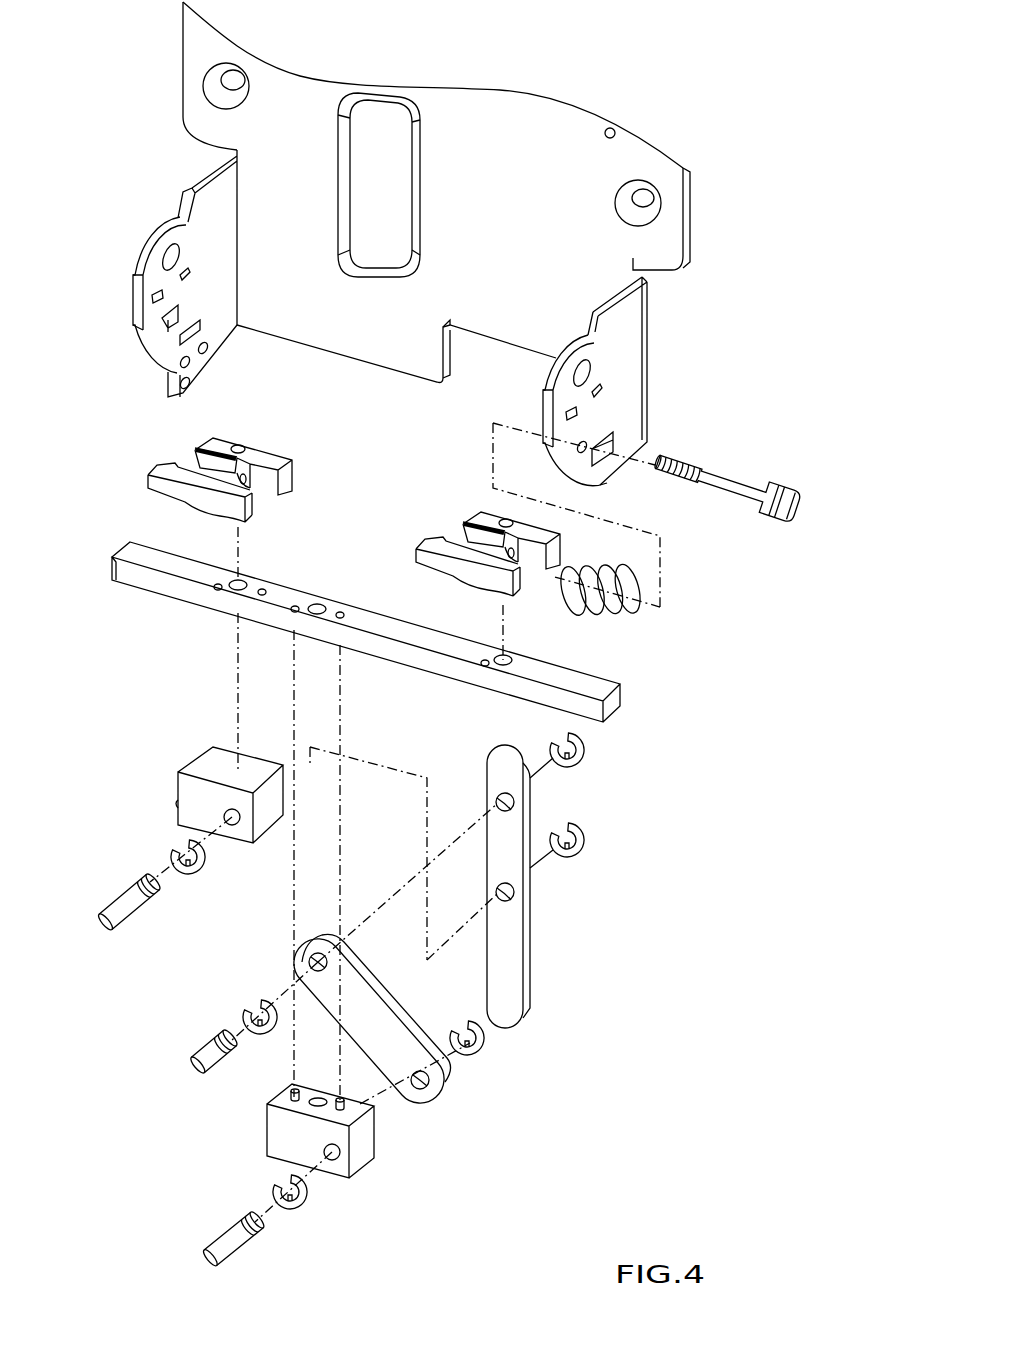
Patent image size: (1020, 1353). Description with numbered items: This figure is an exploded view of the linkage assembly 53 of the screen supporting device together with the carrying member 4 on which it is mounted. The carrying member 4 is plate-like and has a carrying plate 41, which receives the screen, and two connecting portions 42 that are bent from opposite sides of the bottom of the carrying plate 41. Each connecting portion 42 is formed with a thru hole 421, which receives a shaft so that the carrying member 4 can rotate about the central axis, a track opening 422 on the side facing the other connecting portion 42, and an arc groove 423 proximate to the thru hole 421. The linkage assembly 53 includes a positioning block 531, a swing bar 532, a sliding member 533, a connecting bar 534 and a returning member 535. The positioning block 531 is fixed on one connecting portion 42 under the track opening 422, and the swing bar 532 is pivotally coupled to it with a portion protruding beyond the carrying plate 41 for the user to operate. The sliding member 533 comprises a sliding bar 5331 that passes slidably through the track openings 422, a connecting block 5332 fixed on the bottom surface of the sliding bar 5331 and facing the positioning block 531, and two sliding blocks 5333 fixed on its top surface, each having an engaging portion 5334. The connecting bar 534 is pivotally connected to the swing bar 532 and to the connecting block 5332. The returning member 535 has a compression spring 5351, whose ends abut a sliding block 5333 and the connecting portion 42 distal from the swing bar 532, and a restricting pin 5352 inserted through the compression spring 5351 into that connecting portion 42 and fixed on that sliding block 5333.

The carrying member 4 is at (105, 95).
The carrying plate 41 is at (197, 98).
The connecting portions 42 is at (197, 184).
The thru hole 421 is at (182, 259).
The track opening 422 is at (200, 322).
The arc groove 423 is at (126, 251).
The linkage assembly 53 is at (683, 797).
The positioning block 531 is at (215, 762).
The swing bar 532 is at (505, 945).
The sliding member 533 is at (402, 534).
The sliding bar 5331 is at (287, 598).
The connecting block 5332 is at (363, 1143).
The sliding blocks 5333 is at (177, 490).
The engaging portion 5334 is at (240, 447).
The connecting bar 534 is at (440, 1085).
The returning member 535 is at (738, 570).
The compression spring 5351 is at (617, 617).
The restricting pin 5352 is at (737, 492).